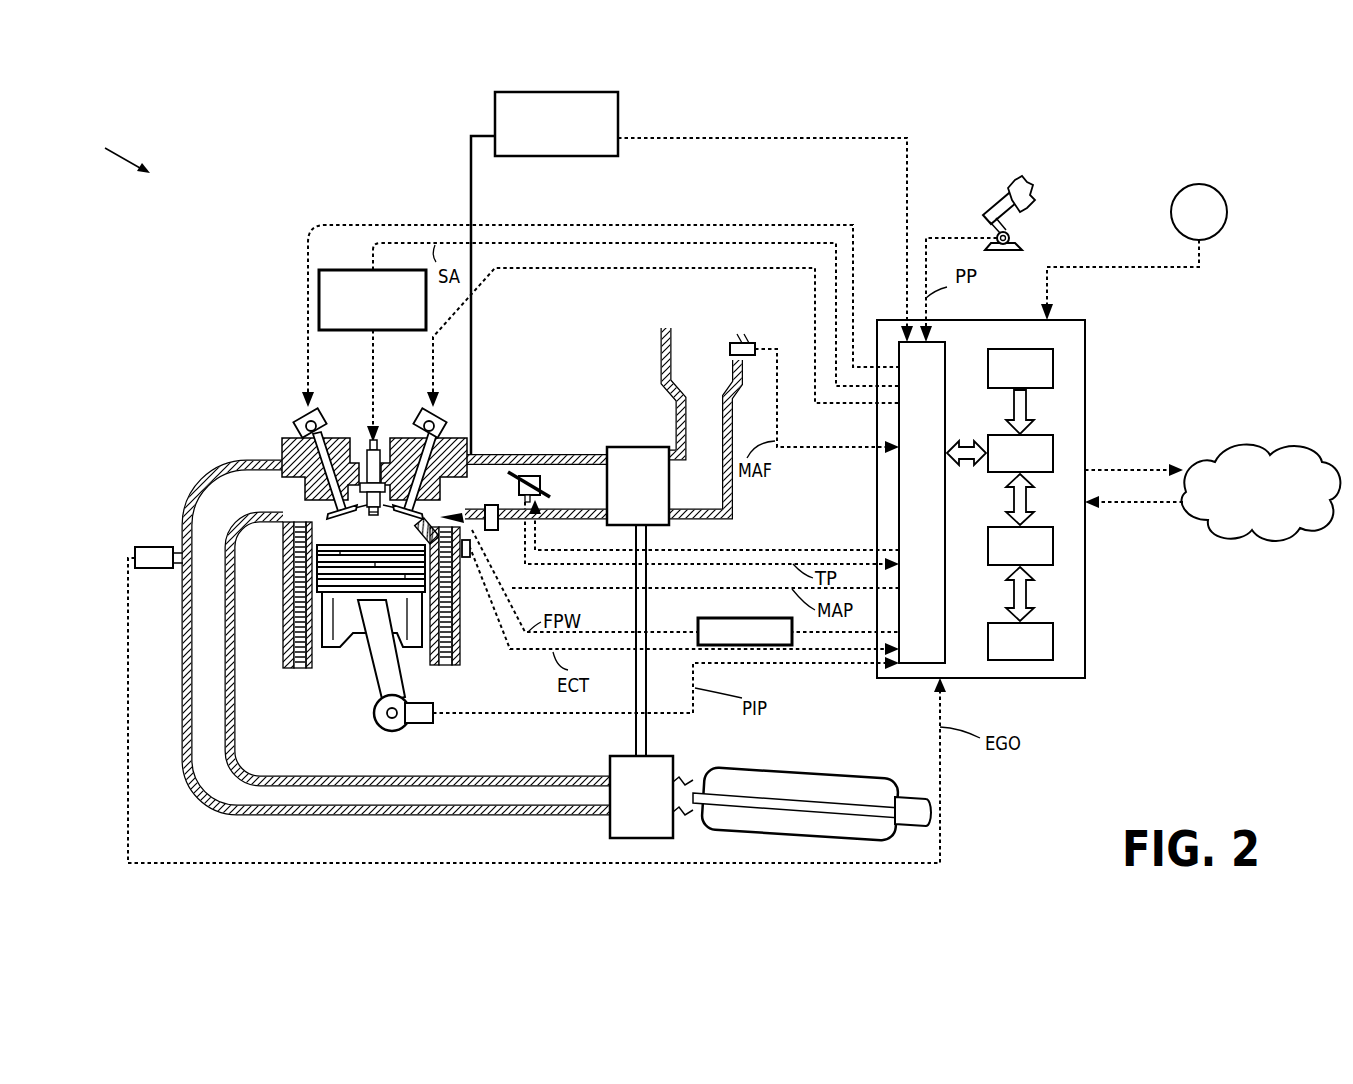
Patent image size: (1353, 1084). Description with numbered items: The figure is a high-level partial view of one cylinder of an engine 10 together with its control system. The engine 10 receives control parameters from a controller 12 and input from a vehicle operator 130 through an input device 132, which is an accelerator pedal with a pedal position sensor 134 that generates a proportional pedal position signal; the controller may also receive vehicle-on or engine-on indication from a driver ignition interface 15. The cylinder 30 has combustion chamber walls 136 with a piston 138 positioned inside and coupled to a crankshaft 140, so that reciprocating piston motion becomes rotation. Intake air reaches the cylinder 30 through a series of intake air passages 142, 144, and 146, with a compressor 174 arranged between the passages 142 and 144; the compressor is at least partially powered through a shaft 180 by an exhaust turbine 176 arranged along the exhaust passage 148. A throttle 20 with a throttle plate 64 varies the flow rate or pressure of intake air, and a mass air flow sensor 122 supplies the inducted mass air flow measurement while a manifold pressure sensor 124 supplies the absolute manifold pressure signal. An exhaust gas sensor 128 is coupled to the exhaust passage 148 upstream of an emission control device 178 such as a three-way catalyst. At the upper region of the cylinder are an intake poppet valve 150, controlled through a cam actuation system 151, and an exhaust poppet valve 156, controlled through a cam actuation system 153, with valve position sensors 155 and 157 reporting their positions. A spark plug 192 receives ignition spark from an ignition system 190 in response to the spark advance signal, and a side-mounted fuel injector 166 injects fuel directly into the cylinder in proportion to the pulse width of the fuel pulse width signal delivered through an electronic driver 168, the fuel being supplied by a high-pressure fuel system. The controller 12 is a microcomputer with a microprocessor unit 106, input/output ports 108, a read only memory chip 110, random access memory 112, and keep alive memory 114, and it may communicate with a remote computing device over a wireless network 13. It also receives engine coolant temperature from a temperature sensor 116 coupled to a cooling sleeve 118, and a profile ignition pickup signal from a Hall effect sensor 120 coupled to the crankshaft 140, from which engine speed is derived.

The engine 10 is at (114, 148).
The controller 12 is at (1073, 320).
The wireless network 13 is at (1251, 501).
The driver ignition interface 15 is at (1190, 224).
The throttle 20 is at (620, 103).
The cylinder 30 is at (288, 545).
The throttle plate 64 is at (510, 472).
The microprocessor unit 106 is at (1057, 447).
The input/output ports 108 is at (947, 348).
The read only memory chip 110 is at (1055, 367).
The random access memory 112 is at (1055, 546).
The keep alive memory 114 is at (1055, 641).
The temperature sensor 116 is at (470, 558).
The cooling sleeve 118 is at (450, 593).
The Hall effect sensor 120 is at (424, 724).
The mass air flow sensor 122 is at (749, 343).
The manifold pressure sensor 124 is at (497, 531).
The exhaust gas sensor 128 is at (130, 548).
The vehicle operator 130 is at (1032, 196).
The input device 132 is at (983, 212).
The pedal position sensor 134 is at (1010, 239).
The combustion chamber walls 136 is at (320, 652).
The piston 138 is at (366, 648).
The crankshaft 140 is at (382, 729).
The intake air passage 142 is at (718, 371).
The intake air passage 144 is at (594, 498).
The intake air passage 146 is at (501, 498).
The exhaust passage 148 is at (268, 505).
The intake poppet valve 150 is at (408, 503).
The cam actuation system 151 is at (420, 413).
The cam actuation system 153 is at (320, 412).
The valve position sensor 155 is at (447, 428).
The exhaust poppet valve 156 is at (294, 458).
The valve position sensor 157 is at (298, 421).
The fuel injector 166 is at (439, 516).
The electronic driver 168 is at (703, 617).
The compressor 174 is at (625, 447).
The exhaust turbine 176 is at (610, 826).
The emission control device 178 is at (860, 770).
The shaft 180 is at (640, 723).
The ignition system 190 is at (327, 268).
The spark plug 192 is at (370, 472).